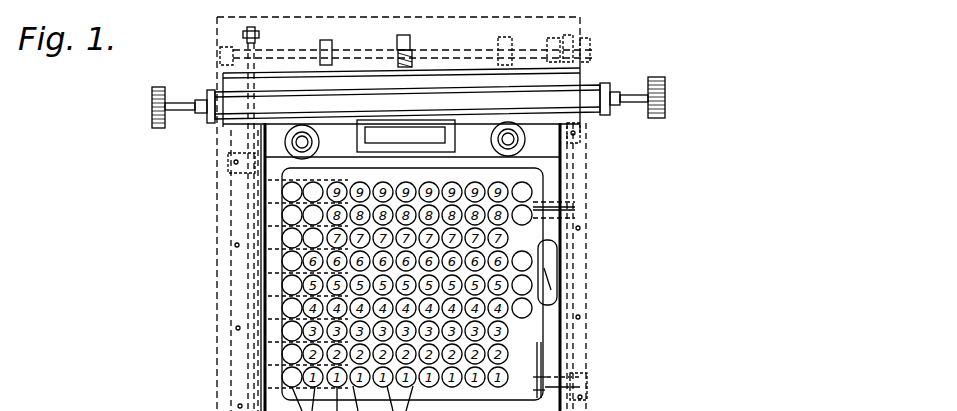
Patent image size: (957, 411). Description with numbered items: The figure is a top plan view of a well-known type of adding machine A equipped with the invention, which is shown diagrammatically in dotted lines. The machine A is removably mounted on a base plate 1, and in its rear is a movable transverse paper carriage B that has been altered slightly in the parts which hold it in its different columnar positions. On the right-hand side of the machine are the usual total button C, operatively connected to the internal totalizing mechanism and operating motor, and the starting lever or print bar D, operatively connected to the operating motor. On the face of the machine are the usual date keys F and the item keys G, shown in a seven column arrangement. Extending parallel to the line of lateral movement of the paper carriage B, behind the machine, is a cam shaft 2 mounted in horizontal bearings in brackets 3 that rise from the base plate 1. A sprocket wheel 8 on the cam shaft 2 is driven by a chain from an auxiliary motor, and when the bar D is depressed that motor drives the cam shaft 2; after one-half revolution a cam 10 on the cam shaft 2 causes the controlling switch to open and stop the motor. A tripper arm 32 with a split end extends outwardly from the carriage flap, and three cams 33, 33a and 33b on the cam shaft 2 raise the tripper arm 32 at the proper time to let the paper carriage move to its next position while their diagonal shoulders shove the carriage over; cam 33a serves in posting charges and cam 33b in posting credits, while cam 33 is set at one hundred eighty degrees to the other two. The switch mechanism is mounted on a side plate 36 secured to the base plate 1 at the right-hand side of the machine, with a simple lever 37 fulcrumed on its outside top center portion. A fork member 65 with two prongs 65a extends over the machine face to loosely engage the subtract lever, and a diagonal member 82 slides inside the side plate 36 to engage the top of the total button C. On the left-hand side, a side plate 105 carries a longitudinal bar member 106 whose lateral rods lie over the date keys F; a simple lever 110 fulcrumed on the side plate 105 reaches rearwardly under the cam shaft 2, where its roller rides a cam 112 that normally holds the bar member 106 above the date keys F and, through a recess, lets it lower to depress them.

The base plate 1 is at (597, 408).
The cam shaft 2 is at (522, 50).
The brackets 3 is at (220, 53).
The sprocket wheel 8 is at (587, 42).
The cam 10 is at (577, 33).
The tripper arm 32 is at (410, 65).
The cam 33 is at (505, 38).
The cam 33a is at (397, 40).
The cam 33b is at (320, 43).
The side plate 36 is at (567, 157).
The simple lever 37 is at (567, 237).
The fork member 65 is at (575, 380).
The prongs 65a is at (516, 410).
The diagonal member 82 is at (573, 202).
The side plate 105 is at (247, 288).
The longitudinal bar member 106 is at (253, 350).
The simple lever 110 is at (250, 145).
The cam 112 is at (243, 40).
The machine A is at (553, 178).
The paper carriage B is at (567, 88).
The total button C is at (573, 210).
The print bar D is at (557, 263).
The date keys F is at (313, 182).
The item keys G is at (493, 181).